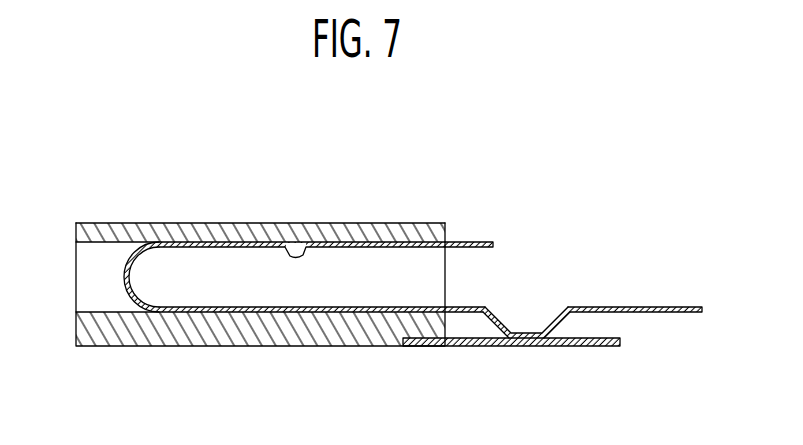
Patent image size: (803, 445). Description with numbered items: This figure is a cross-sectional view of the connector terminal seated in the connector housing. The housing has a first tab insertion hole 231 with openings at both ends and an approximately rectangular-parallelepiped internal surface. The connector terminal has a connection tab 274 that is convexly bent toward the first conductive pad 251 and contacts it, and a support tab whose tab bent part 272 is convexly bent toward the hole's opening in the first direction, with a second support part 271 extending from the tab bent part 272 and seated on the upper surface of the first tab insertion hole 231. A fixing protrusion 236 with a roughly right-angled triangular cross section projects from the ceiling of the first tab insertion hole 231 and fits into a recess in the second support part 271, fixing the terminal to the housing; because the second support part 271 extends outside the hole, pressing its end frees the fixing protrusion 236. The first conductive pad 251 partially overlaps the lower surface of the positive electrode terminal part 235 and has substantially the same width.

The first tab insertion hole 231 is at (438, 287).
The positive electrode terminal part 235 is at (95, 233).
The fixing protrusion 236 is at (313, 257).
The second support part 271 is at (470, 241).
The tab bent part 272 is at (125, 280).
The connection tab 274 is at (527, 334).
The first conductive pad 251 is at (565, 346).